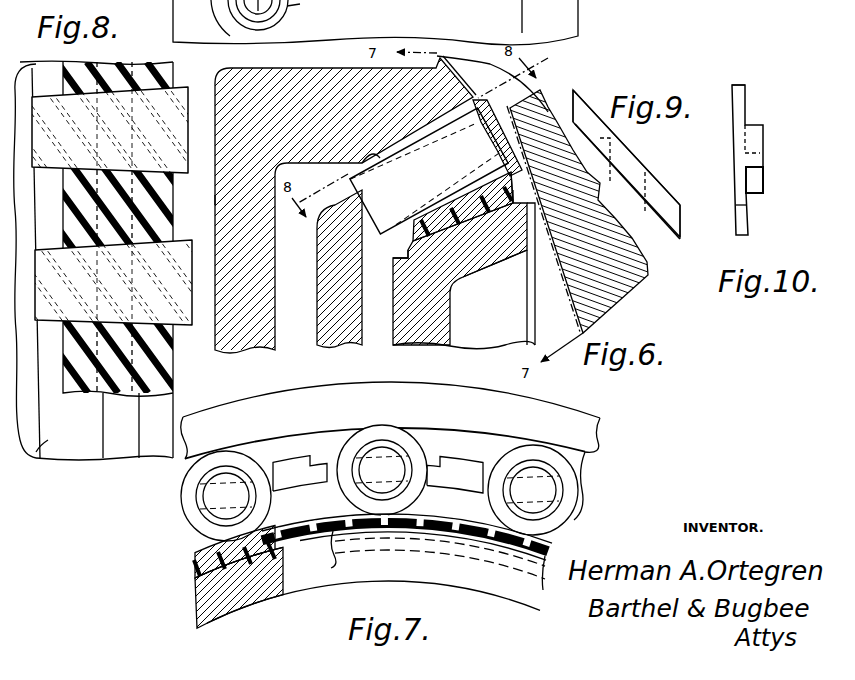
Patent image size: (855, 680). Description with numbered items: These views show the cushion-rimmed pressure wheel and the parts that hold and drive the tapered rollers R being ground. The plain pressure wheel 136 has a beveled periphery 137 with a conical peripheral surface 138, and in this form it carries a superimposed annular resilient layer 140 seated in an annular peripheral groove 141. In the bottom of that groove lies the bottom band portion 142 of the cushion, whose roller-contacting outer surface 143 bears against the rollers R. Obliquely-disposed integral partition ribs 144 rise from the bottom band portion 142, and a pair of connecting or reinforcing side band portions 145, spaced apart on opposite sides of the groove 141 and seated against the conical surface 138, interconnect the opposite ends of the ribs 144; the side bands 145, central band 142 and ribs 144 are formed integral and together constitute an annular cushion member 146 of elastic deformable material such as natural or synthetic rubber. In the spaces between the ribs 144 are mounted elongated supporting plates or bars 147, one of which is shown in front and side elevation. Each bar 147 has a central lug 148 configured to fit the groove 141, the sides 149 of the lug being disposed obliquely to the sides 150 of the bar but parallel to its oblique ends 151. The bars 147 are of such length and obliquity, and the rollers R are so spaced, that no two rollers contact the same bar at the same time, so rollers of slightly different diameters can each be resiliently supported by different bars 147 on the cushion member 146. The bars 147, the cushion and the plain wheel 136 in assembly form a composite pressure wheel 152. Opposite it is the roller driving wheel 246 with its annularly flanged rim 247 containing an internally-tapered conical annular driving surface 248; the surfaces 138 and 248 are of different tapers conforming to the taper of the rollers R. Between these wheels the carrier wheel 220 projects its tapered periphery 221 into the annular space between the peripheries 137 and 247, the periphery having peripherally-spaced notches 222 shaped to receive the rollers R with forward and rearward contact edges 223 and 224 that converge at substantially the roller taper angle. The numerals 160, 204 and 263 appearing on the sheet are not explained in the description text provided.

In FIG. 6, the pressure wheel 136 is at (393, 338).
In FIG. 8, the beveled periphery 137 is at (157, 454).
In FIG. 6, the beveled periphery 137 is at (449, 276).
In FIG. 7, the beveled periphery 137 is at (212, 606).
In FIG. 8, the conical peripheral surface 138 is at (52, 452).
In FIG. 6, the conical peripheral surface 138 is at (463, 266).
In FIG. 8, the annular resilient layer 140 is at (176, 340).
In FIG. 6, the annular resilient layer 140 is at (512, 187).
In FIG. 7, the annular resilient layer 140 is at (194, 548).
In FIG. 8, the annular peripheral groove 141 is at (121, 425).
In FIG. 6, the annular peripheral groove 141 is at (516, 254).
In FIG. 6, the bottom band portion 142 is at (488, 256).
In FIG. 7, the bottom band portion 142 is at (190, 588).
In FIG. 8, the roller-contacting outer surface 143 is at (163, 357).
In FIG. 6, the roller-contacting outer surface 143 is at (420, 224).
In FIG. 7, the roller-contacting outer surface 143 is at (200, 546).
In FIG. 8, the oblique partition ribs 144 is at (170, 372).
In FIG. 6, the oblique partition ribs 144 is at (458, 200).
In FIG. 7, the oblique partition ribs 144 is at (466, 520).
In FIG. 6, the side band portions 145 is at (393, 254).
In FIG. 6, the annular cushion member 146 is at (519, 195).
In FIG. 7, the annular cushion member 146 is at (549, 551).
In FIG. 8, the roller supporting bars 147 is at (72, 225).
In FIG. 9, the roller supporting bars 147 is at (663, 176).
In FIG. 10, the roller supporting bars 147 is at (730, 125).
In FIG. 7, the roller supporting bars 147 is at (334, 522).
In FIG. 10, the central lugs 148 is at (752, 142).
In FIG. 9, the lug sides 149 is at (598, 139).
In FIG. 9, the bar sides 150 is at (588, 100).
In FIG. 10, the bar sides 150 is at (740, 103).
In FIG. 9, the oblique ends 151 is at (572, 105).
In FIG. 10, the oblique ends 151 is at (745, 222).
In FIG. 8, the composite pressure wheel 152 is at (72, 462).
In FIG. 6, the composite pressure wheel 152 is at (440, 347).
In FIG. 7, the composite pressure wheel 152 is at (232, 616).
In FIG. 6, the shaft 160 is at (290, 6).
In FIG. 6, the frame 204 is at (475, 6).
In FIG. 6, the carrier wheel 220 is at (316, 291).
In FIG. 7, the carrier wheel 220 is at (483, 460).
In FIG. 7, the tapered periphery 221 is at (275, 457).
In FIG. 6, the notches 222 is at (322, 269).
In FIG. 7, the forward contact edge 223 is at (428, 462).
In FIG. 7, the rearward contact edge 224 is at (309, 470).
In FIG. 6, the roller driving wheel 246 is at (212, 86).
In FIG. 7, the roller driving wheel 246 is at (593, 432).
In FIG. 6, the annularly flanged rim 247 is at (379, 199).
In FIG. 7, the annularly flanged rim 247 is at (412, 411).
In FIG. 6, the conical annular driving surface 248 is at (351, 164).
In FIG. 6, the gap 263 is at (216, 200).
In FIG. 8, the rollers R is at (186, 98).
In FIG. 6, the rollers R is at (429, 171).
In FIG. 7, the rollers R is at (379, 433).